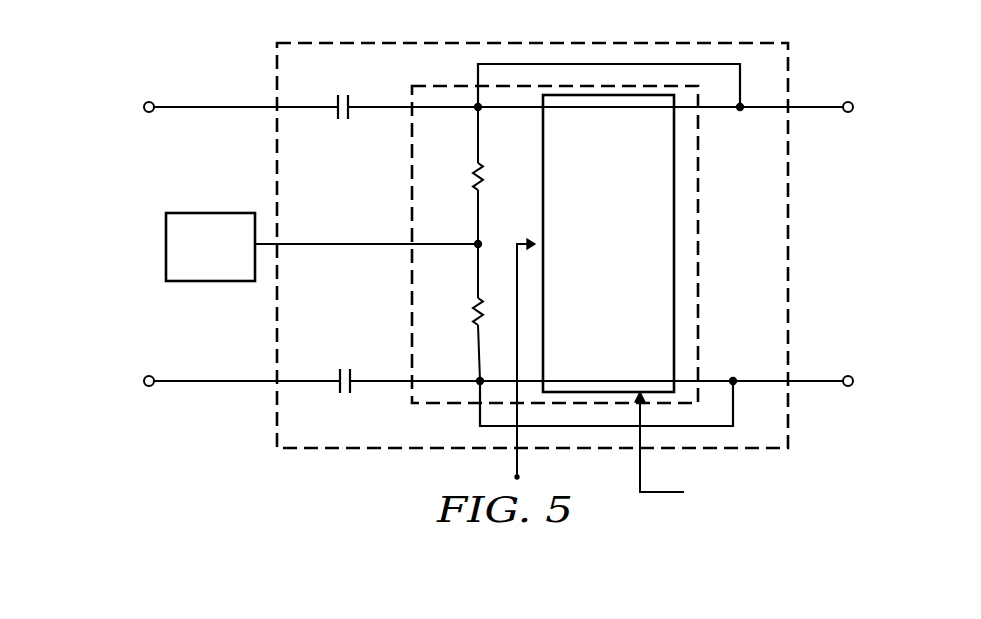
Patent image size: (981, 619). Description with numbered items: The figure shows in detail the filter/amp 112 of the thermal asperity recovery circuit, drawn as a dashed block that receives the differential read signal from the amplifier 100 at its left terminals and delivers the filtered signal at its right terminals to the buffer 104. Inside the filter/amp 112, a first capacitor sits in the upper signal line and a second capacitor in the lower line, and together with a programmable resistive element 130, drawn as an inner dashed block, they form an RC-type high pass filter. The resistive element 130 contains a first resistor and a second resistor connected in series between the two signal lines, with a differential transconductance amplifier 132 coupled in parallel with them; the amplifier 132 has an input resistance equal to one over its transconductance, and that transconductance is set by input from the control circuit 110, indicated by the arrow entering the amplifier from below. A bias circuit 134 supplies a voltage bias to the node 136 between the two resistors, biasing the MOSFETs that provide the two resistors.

The amplifier 100 is at (195, 244).
The buffer 104 is at (842, 244).
The control circuit 110 is at (737, 454).
The filter/amp 112 is at (790, 62).
The programmable resistive element 130 is at (699, 240).
The differential transconductance amplifier 132 is at (629, 300).
The bias circuit 134 is at (211, 213).
The bias node 136 is at (475, 242).